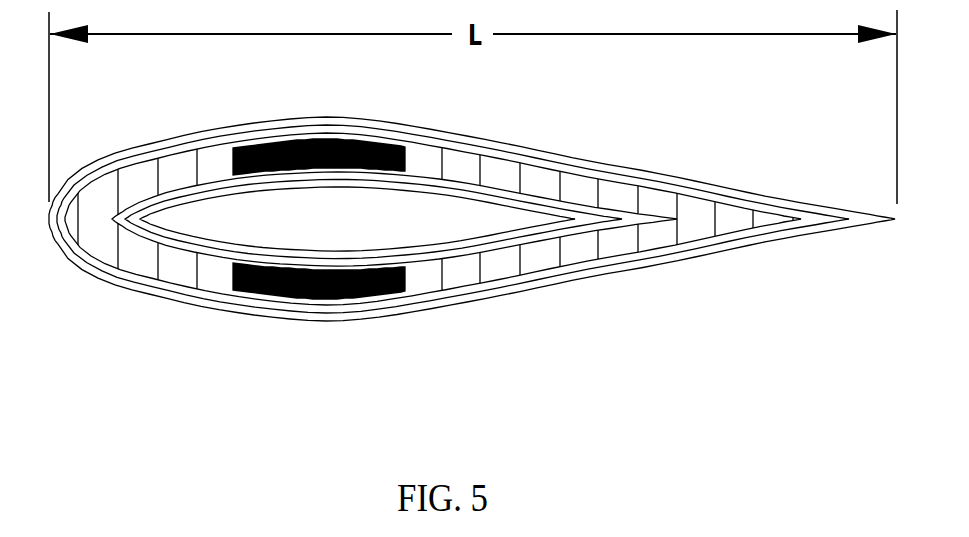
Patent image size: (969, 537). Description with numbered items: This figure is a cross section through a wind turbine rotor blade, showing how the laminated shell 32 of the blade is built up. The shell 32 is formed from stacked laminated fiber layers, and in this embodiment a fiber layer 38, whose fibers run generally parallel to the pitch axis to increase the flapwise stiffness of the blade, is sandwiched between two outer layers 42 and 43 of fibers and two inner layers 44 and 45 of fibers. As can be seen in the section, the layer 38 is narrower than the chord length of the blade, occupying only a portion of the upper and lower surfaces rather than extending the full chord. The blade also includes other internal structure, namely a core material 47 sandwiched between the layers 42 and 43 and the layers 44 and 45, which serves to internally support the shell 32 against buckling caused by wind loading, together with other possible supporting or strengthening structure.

The shell 32 is at (499, 137).
The layer 42 is at (576, 158).
The layer 43 is at (651, 186).
The layer 44 is at (173, 190).
The layer 45 is at (215, 190).
The core material 47 is at (661, 240).
The fiber layer 38 is at (256, 140).